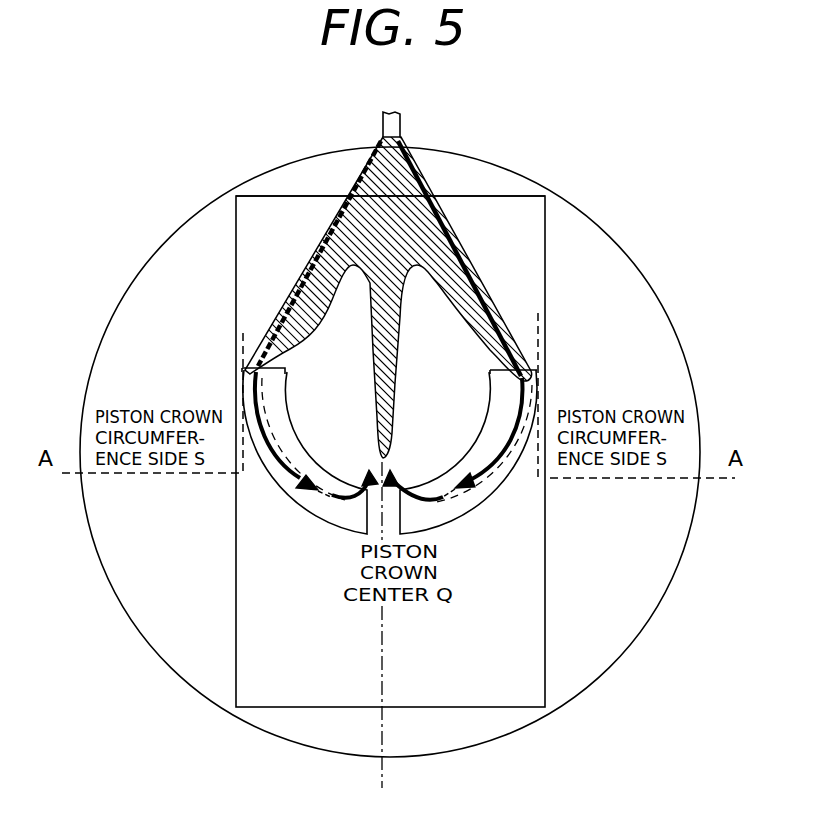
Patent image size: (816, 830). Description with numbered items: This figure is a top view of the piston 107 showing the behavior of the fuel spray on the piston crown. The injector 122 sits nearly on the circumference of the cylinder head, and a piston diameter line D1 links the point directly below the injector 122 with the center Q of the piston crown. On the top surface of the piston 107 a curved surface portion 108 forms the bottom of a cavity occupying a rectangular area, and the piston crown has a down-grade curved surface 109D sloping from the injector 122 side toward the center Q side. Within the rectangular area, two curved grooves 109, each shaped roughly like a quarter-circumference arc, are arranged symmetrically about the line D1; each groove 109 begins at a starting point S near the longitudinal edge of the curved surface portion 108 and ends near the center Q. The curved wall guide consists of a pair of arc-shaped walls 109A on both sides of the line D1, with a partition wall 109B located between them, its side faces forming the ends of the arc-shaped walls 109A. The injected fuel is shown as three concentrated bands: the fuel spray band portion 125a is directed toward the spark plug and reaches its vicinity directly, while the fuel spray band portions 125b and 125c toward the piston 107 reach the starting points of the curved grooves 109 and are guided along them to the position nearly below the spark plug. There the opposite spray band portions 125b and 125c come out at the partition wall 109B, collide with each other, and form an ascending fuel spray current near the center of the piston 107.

The piston 107 is at (268, 172).
The curved surface portion 108 is at (545, 650).
The curved groove 109 is at (322, 505).
The arc-shaped wall 109A is at (270, 470).
The partition wall 109B is at (406, 484).
The down-grade curved surface 109D is at (530, 231).
The injector 122 is at (401, 127).
The fuel spray band portion 125a is at (387, 405).
The fuel spray band portion 125b is at (287, 313).
The fuel spray band portion 125c is at (497, 307).
The piston diameter line D1 is at (382, 772).